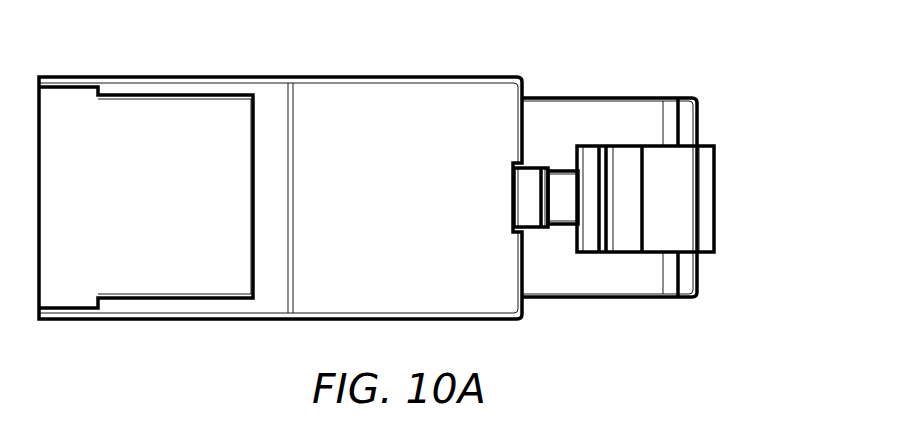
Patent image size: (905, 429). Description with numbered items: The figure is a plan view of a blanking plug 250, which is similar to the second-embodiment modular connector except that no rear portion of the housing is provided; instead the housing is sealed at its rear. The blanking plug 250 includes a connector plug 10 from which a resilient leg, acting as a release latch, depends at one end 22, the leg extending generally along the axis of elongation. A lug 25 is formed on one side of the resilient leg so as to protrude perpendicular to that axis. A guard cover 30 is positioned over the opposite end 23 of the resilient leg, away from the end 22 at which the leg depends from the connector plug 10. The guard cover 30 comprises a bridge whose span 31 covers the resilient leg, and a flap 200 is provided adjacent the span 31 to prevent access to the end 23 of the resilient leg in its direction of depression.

The connector plug 10 is at (679, 175).
The end of the leg 22 is at (682, 197).
The end of the resilient leg 23 is at (553, 183).
The lug 25 is at (617, 168).
The guard cover 30 is at (463, 50).
The span 31 is at (396, 120).
The flap 200 is at (521, 216).
The blanking plug 250 is at (719, 52).